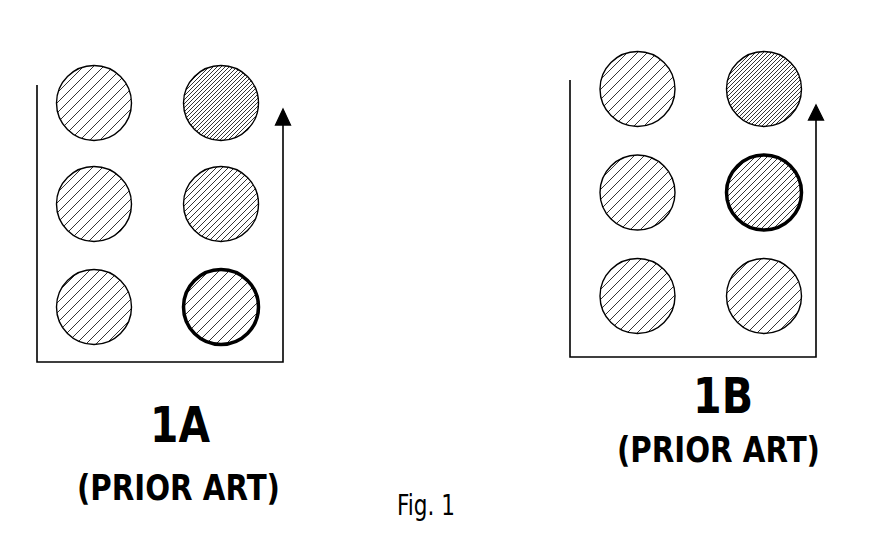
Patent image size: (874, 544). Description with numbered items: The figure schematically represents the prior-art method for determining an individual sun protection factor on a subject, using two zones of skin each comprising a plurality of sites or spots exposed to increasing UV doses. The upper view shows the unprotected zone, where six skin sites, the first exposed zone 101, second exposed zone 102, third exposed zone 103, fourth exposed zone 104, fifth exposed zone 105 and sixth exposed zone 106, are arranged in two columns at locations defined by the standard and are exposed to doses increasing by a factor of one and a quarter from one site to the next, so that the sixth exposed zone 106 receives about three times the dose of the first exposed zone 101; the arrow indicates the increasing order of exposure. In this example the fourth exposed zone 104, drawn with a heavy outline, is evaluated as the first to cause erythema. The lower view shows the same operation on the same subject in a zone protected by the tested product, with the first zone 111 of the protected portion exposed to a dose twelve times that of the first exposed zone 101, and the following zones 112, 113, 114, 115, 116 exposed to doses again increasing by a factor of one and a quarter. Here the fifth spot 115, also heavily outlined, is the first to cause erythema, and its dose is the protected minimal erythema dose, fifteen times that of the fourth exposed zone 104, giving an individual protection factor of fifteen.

In FIG. 1A, the first exposed zone 101 is at (94, 66).
In FIG. 1A, the second exposed zone 102 is at (94, 166).
In FIG. 1A, the third exposed zone 103 is at (94, 270).
In FIG. 1A, the fourth exposed zone 104 is at (221, 270).
In FIG. 1A, the fifth exposed zone 105 is at (221, 166).
In FIG. 1A, the sixth exposed zone 106 is at (221, 66).
In FIG. 1B, the first zone of protected portion 111 is at (638, 52).
In FIG. 1B, the second protected zone 112 is at (638, 155).
In FIG. 1B, the third protected zone 113 is at (638, 258).
In FIG. 1B, the fourth protected zone 114 is at (764, 258).
In FIG. 1B, the fifth spot of protected zone 115 is at (764, 155).
In FIG. 1B, the sixth protected zone 116 is at (764, 52).